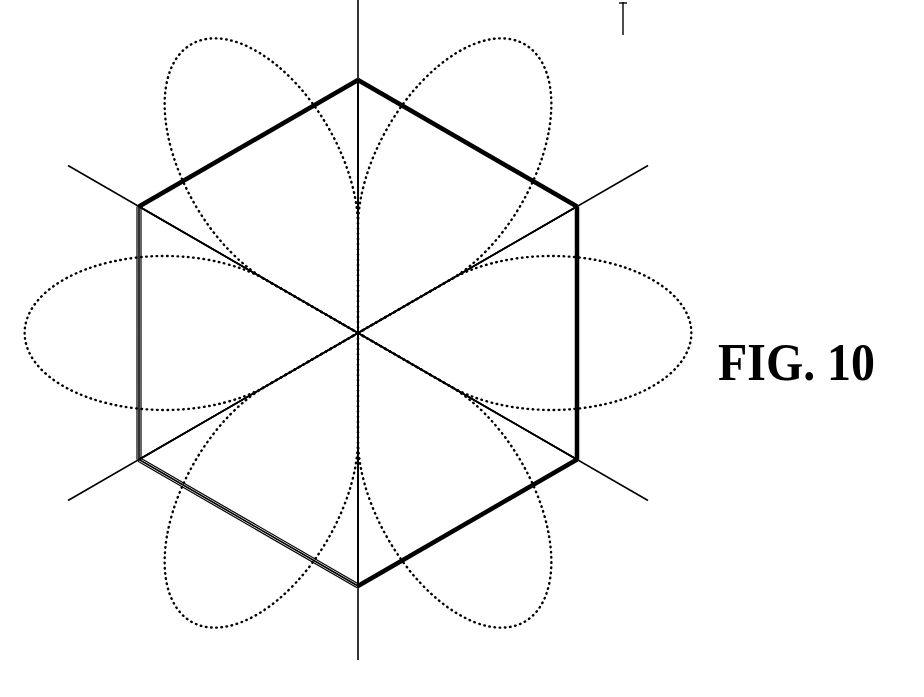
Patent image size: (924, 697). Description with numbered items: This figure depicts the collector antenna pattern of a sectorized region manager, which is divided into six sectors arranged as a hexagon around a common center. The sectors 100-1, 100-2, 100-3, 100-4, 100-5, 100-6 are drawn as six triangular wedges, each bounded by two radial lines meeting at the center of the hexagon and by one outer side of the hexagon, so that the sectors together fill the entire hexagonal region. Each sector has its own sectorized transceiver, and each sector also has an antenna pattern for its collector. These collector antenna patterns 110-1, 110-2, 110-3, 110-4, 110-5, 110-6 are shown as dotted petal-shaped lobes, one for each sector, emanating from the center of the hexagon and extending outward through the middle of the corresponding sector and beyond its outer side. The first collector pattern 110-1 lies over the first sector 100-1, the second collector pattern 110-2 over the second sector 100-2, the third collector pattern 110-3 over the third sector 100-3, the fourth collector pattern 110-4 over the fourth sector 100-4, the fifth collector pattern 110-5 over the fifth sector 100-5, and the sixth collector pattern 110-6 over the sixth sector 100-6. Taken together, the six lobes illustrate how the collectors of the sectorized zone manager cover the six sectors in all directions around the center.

The first sector 100-1 is at (467, 206).
The second sector 100-2 is at (467, 333).
The third sector 100-3 is at (467, 459).
The fourth sector 100-4 is at (248, 460).
The fifth sector 100-5 is at (247, 333).
The sixth sector 100-6 is at (248, 206).
The collector antenna pattern 110-1 is at (441, 189).
The collector antenna pattern 110-2 is at (524, 333).
The collector antenna pattern 110-3 is at (441, 478).
The collector antenna pattern 110-4 is at (275, 478).
The collector antenna pattern 110-5 is at (191, 333).
The collector antenna pattern 110-6 is at (275, 189).